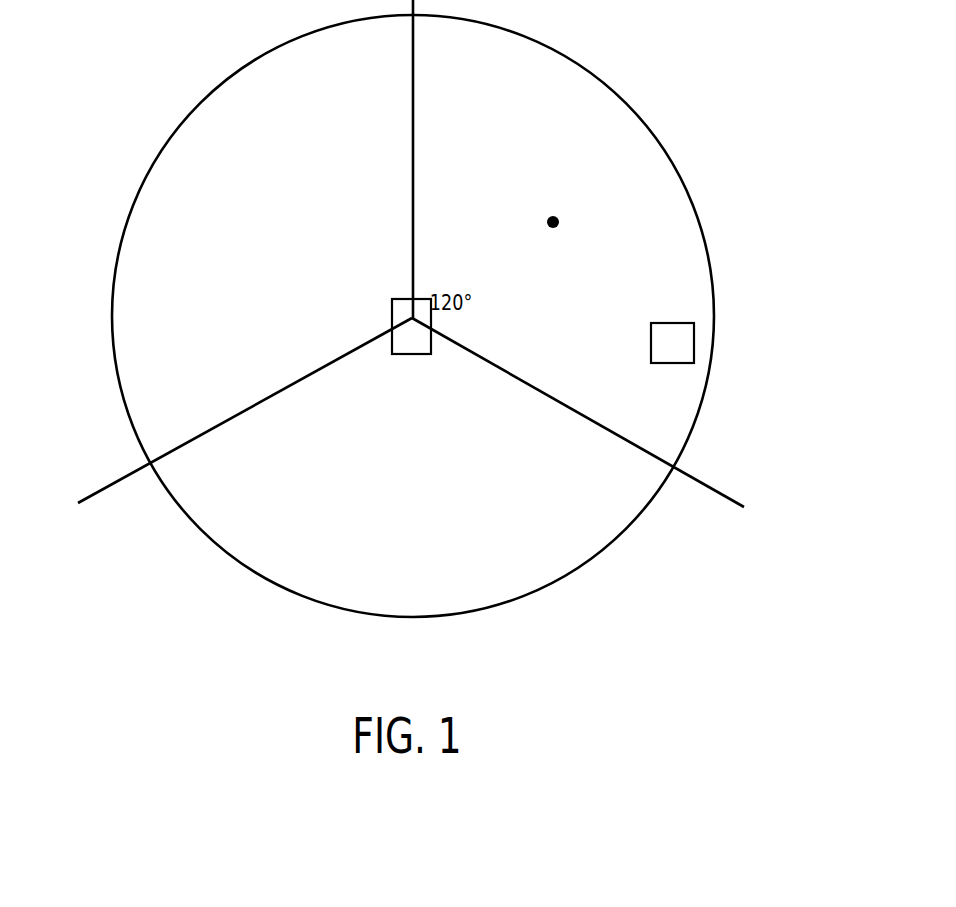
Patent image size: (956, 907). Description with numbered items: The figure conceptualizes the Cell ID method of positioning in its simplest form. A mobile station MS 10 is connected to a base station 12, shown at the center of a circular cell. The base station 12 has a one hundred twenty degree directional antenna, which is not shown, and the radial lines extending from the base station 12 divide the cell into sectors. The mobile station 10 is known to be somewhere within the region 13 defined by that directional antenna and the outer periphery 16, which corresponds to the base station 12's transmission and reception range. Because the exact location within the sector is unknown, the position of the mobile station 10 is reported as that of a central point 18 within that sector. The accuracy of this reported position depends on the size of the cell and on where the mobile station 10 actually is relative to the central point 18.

The mobile station 10 is at (694, 342).
The base station 12 is at (413, 355).
The region 13 is at (499, 98).
The outer periphery 16 is at (697, 216).
The central point 18 is at (556, 215).